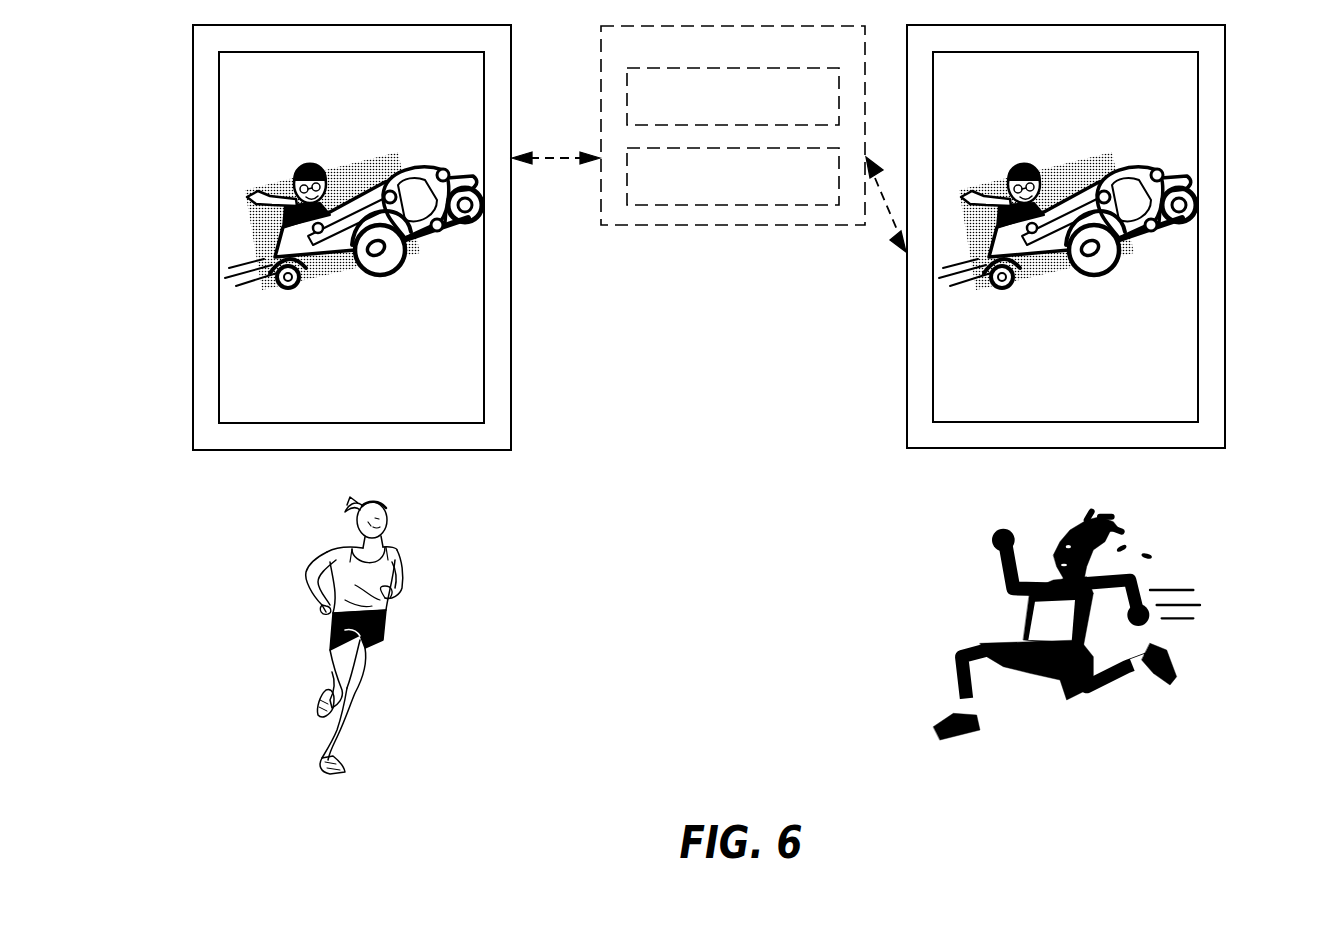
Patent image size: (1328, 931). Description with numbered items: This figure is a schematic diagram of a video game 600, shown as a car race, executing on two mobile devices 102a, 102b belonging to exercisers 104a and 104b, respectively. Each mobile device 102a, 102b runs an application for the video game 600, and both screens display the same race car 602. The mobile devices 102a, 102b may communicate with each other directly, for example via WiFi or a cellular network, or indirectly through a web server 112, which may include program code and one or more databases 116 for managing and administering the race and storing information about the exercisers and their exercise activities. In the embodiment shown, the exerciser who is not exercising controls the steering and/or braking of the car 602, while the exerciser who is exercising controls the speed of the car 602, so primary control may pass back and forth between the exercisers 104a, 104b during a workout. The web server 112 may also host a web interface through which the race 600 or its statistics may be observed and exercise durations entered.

The mobile device 102a is at (511, 299).
The mobile device 102b is at (1225, 343).
The exerciser 104a is at (403, 607).
The exerciser 104b is at (1150, 682).
The web server 112 is at (601, 68).
The databases 116 is at (663, 68).
The video game 600 is at (708, 237).
The race car 602 is at (378, 262).